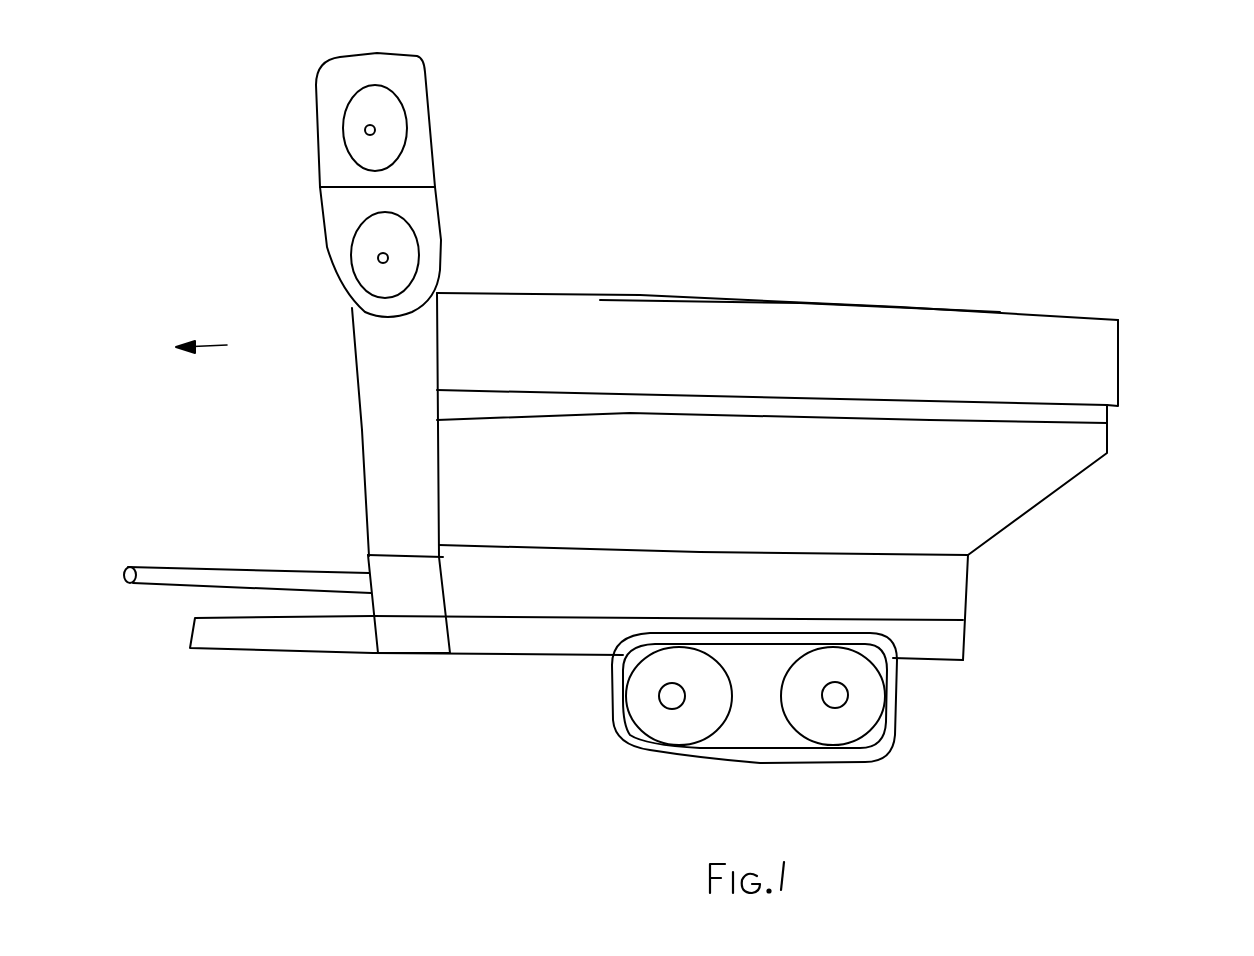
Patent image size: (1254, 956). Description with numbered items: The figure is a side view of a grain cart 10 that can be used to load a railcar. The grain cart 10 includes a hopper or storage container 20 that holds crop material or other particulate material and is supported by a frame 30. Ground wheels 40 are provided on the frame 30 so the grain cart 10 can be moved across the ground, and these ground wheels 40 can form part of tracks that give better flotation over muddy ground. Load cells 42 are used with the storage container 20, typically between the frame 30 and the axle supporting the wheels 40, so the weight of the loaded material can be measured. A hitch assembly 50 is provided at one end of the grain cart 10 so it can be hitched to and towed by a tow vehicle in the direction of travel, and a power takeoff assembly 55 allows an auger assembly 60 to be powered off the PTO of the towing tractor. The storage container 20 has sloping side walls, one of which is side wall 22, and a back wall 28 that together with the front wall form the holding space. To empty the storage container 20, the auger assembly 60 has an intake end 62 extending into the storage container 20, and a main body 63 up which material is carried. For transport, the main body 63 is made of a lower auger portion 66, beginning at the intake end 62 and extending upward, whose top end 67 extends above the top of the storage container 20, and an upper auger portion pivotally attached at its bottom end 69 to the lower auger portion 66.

The grain cart 10 is at (903, 200).
The storage container 20 is at (668, 297).
The side wall 22 is at (948, 360).
The back wall 28 is at (1118, 372).
The frame 30 is at (550, 643).
The ground wheels 40 is at (890, 733).
The load cells 42 is at (890, 650).
The hitch assembly 50 is at (193, 655).
The power takeoff (PTO) assembly 55 is at (207, 570).
The auger assembly 60 is at (258, 288).
The intake end 62 is at (372, 552).
The main body 63 is at (370, 453).
The lower auger portion 66 is at (375, 375).
The top end 67 is at (317, 243).
The bottom end 69 is at (320, 103).